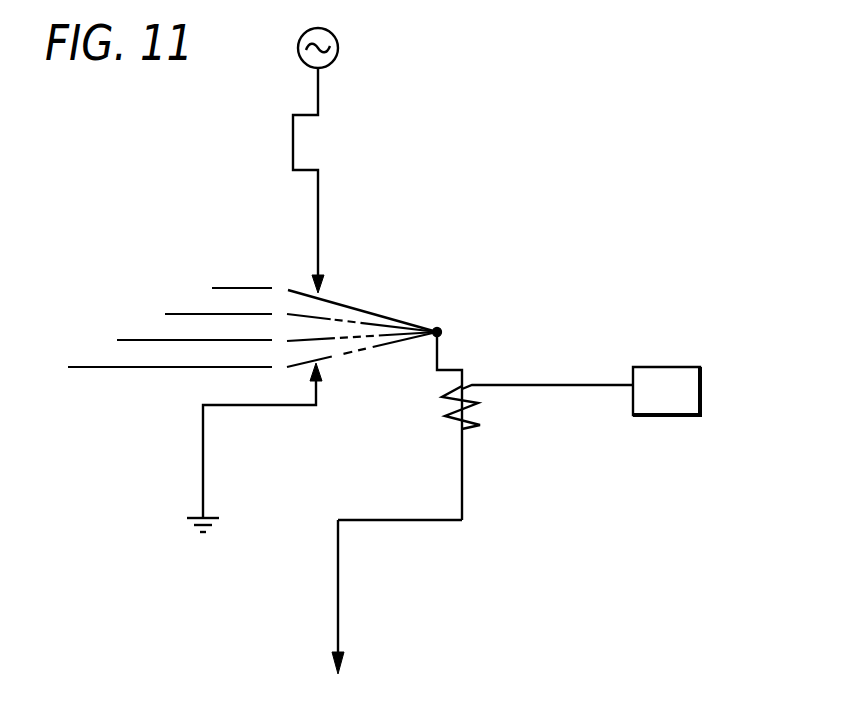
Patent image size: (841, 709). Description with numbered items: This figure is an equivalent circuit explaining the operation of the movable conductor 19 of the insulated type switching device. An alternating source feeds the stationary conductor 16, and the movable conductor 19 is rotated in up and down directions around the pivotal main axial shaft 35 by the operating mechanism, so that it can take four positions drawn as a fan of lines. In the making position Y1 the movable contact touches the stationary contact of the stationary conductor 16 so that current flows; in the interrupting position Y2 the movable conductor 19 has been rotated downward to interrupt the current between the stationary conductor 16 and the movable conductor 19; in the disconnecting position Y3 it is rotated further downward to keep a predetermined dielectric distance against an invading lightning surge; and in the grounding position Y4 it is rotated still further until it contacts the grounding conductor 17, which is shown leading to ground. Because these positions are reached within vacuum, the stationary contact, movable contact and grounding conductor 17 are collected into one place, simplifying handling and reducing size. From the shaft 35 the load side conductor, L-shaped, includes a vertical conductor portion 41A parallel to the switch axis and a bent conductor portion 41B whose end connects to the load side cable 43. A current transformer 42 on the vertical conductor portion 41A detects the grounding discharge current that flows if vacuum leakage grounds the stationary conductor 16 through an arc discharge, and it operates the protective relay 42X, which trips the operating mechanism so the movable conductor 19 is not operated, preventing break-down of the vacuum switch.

The stationary conductor 16 is at (318, 200).
The grounding conductor 17 is at (316, 393).
The movable conductor 19 is at (350, 305).
The pivotal main axial shaft 35 is at (438, 328).
The vertical conductor portion 41A is at (462, 472).
The bent conductor portion 41B is at (415, 520).
The current transformer 42 is at (482, 411).
The protective relay 42X is at (665, 415).
The load side cable 43 is at (338, 625).
The making position Y1 is at (242, 275).
The interrupting position Y2 is at (218, 300).
The disconnecting position Y3 is at (194, 327).
The grounding position Y4 is at (170, 353).